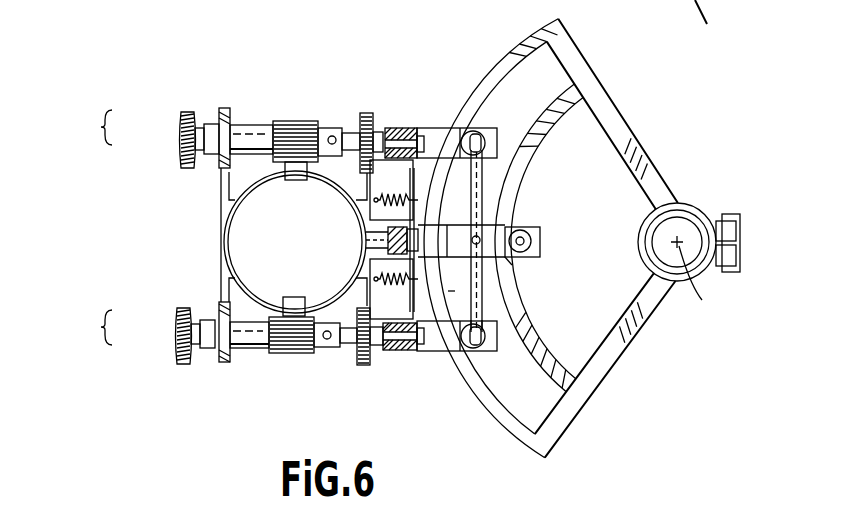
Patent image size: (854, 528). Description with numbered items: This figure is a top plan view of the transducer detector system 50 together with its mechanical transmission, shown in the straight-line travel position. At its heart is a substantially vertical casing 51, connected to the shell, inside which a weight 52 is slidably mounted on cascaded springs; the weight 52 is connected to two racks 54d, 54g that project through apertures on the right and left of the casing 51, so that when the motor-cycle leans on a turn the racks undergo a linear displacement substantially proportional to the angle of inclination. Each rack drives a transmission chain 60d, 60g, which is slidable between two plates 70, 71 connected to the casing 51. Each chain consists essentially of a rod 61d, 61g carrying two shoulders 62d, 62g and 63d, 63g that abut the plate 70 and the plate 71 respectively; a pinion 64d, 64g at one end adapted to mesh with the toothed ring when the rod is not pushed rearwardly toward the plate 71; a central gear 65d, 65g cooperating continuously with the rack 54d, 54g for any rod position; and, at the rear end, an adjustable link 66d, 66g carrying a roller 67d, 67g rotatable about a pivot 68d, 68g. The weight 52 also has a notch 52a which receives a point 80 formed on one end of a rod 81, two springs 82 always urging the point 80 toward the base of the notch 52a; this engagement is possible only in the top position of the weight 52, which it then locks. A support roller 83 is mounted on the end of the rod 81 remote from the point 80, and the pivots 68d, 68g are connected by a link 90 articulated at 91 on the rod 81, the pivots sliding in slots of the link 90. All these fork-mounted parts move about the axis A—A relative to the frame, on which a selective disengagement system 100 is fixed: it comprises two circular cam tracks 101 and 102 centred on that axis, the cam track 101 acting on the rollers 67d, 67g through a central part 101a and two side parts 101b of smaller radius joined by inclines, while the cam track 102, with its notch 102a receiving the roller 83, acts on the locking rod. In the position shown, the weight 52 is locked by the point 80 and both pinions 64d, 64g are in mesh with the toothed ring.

The transducer detector system 50 is at (203, 238).
The casing 51 is at (216, 210).
The weight 52 is at (236, 246).
The notch 52a is at (360, 233).
The rack 54d is at (292, 179).
The rack 54g is at (287, 297).
The transmission chain 60d is at (84, 127).
The transmission chain 60g is at (84, 327).
The rod 61d is at (354, 112).
The rod 61g is at (347, 346).
The shoulder 62d is at (238, 137).
The shoulder 62g is at (230, 344).
The shoulder 63d is at (336, 132).
The shoulder 63g is at (330, 340).
The pinion 64d is at (180, 137).
The pinion 64g is at (176, 336).
The gear 65d is at (288, 122).
The gear 65g is at (278, 354).
The adjustable link 66d is at (440, 128).
The adjustable link 66g is at (423, 351).
The roller 67d is at (464, 133).
The roller 67g is at (474, 349).
The pivot 68d is at (487, 130).
The pivot 68g is at (466, 352).
The plate 70 is at (228, 178).
The plate 71 is at (393, 127).
The point 80 is at (360, 243).
The rod 81 is at (452, 244).
The spring 82 is at (392, 193).
The support roller 83 is at (523, 231).
The link 90 is at (480, 182).
The articulation 91 is at (479, 237).
The selective disengagement system 100 is at (646, 313).
The cam track 101 is at (532, 35).
The central part 101a is at (450, 291).
The side part 101b is at (548, 70).
The cam track 102 is at (551, 331).
The notch 102a is at (509, 265).